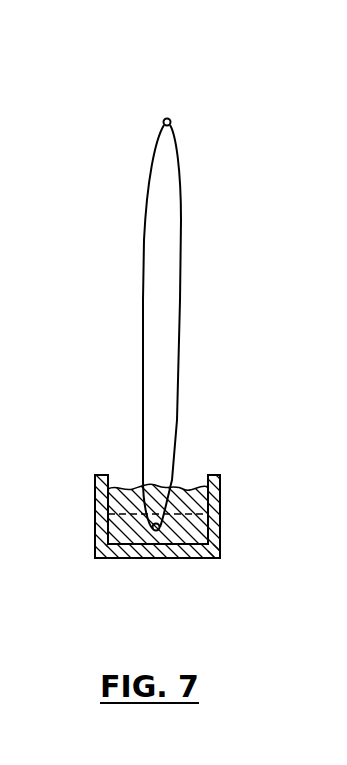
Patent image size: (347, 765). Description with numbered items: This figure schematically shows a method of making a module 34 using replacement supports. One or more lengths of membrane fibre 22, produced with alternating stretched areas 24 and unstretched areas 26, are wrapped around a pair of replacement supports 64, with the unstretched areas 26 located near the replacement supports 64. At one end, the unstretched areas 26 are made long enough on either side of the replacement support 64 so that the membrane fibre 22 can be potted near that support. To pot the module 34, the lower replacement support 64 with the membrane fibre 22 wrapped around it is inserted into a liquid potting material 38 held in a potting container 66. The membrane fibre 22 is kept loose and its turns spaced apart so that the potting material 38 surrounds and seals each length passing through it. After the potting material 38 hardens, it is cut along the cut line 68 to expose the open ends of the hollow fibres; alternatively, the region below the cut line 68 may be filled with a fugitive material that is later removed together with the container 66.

The membrane fibre 22 is at (180, 292).
The stretched areas 24 is at (179, 340).
The unstretched areas 26 is at (181, 150).
The module 34 is at (101, 242).
The potting material 38 is at (200, 497).
The replacement supports 64 is at (172, 122).
The potting container 66 is at (180, 558).
The cut line 68 is at (205, 513).